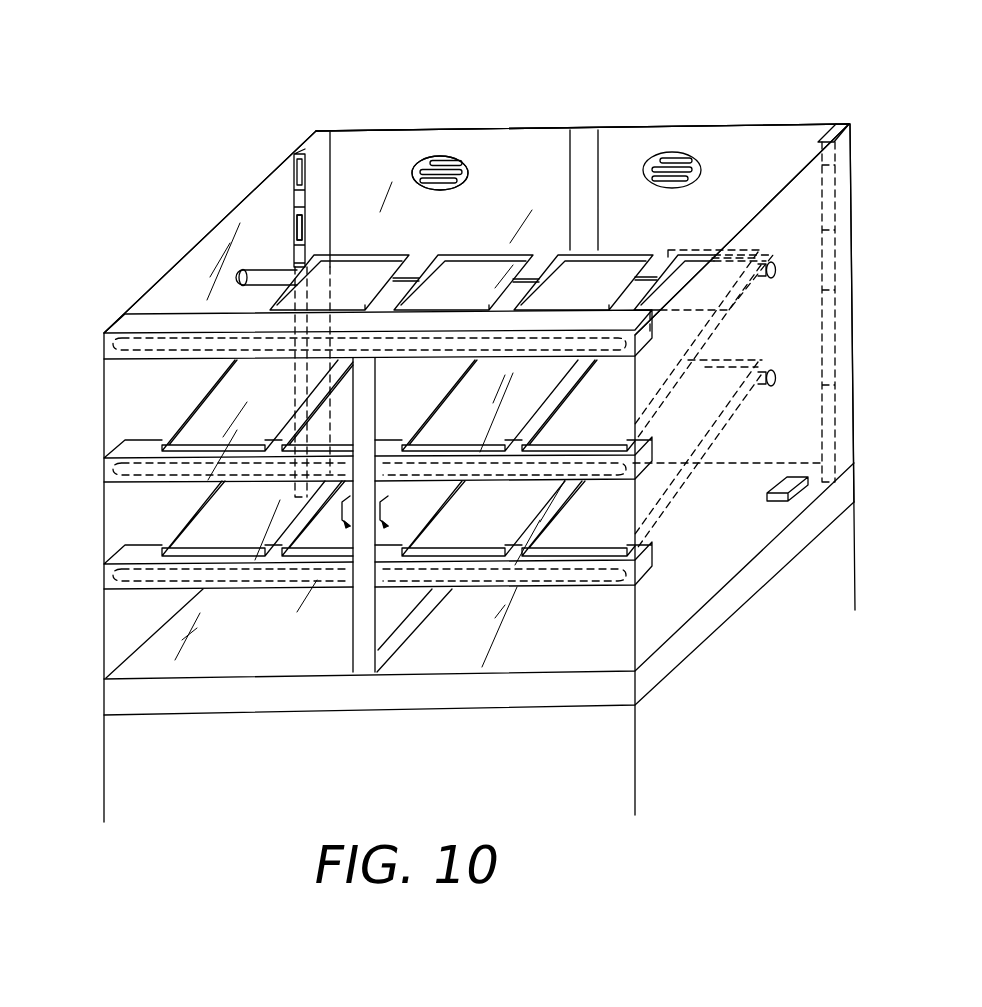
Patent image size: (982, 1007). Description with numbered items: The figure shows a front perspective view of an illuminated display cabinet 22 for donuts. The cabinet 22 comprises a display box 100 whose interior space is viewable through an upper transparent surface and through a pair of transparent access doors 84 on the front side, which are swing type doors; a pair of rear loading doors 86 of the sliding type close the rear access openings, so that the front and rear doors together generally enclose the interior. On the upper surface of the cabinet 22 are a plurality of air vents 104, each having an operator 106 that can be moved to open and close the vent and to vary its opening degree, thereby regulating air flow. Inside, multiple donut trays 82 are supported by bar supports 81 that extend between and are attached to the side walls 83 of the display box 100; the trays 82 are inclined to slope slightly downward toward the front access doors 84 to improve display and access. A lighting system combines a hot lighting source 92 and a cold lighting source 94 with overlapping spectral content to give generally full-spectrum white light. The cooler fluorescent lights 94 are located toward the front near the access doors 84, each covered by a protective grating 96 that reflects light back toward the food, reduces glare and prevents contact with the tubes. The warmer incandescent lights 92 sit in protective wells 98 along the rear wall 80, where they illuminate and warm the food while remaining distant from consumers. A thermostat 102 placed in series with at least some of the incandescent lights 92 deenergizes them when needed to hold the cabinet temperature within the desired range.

The illuminated display cabinet 22 is at (885, 216).
The rear wall 80 is at (640, 127).
The bar supports 81 is at (257, 268).
The donut trays 82 is at (463, 252).
The side walls 83 is at (192, 245).
The transparent access doors 84 is at (262, 655).
The rear loading doors 86 is at (525, 129).
The hot lighting source 92 is at (297, 167).
The cold lighting source 94 is at (120, 335).
The protective grating 96 is at (642, 335).
The protective wells 98 is at (303, 187).
The display box 100 is at (418, 131).
The thermostat 102 is at (800, 491).
The air vent 104 is at (427, 164).
The operator 106 is at (450, 152).